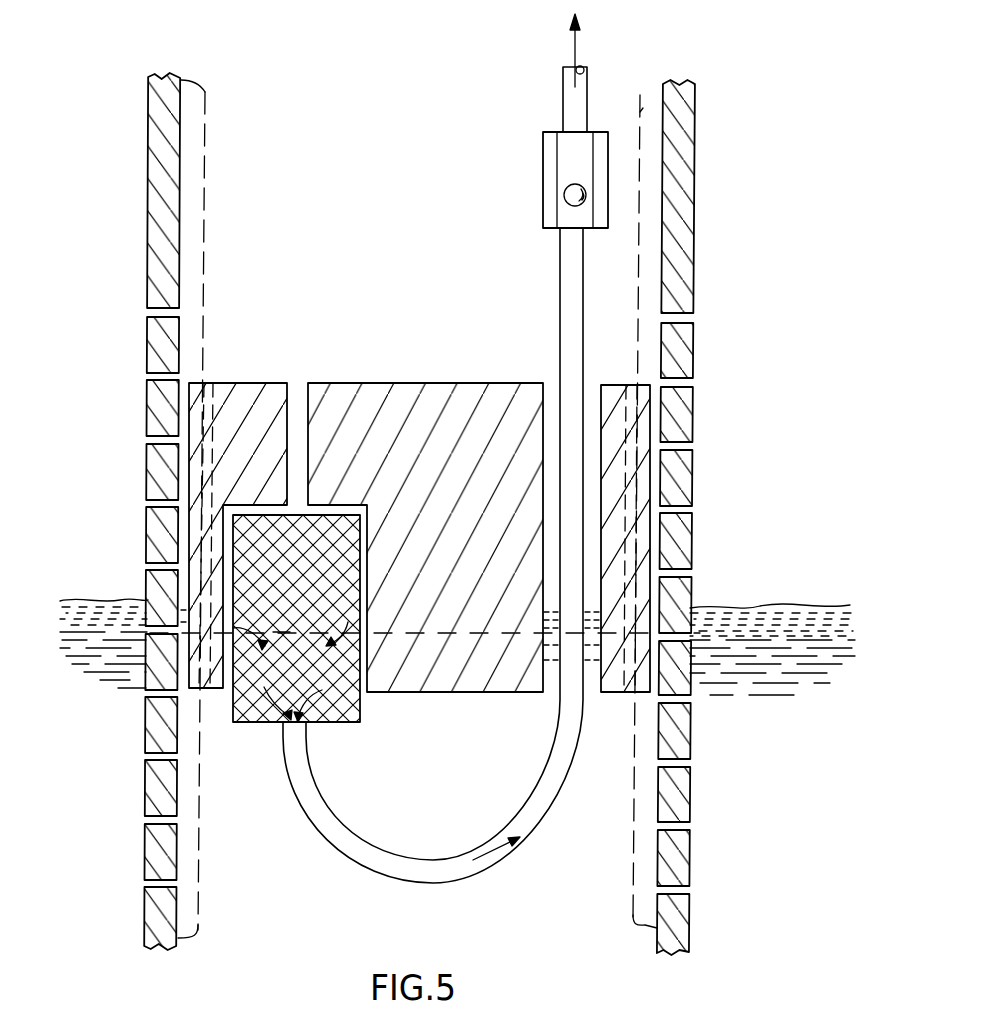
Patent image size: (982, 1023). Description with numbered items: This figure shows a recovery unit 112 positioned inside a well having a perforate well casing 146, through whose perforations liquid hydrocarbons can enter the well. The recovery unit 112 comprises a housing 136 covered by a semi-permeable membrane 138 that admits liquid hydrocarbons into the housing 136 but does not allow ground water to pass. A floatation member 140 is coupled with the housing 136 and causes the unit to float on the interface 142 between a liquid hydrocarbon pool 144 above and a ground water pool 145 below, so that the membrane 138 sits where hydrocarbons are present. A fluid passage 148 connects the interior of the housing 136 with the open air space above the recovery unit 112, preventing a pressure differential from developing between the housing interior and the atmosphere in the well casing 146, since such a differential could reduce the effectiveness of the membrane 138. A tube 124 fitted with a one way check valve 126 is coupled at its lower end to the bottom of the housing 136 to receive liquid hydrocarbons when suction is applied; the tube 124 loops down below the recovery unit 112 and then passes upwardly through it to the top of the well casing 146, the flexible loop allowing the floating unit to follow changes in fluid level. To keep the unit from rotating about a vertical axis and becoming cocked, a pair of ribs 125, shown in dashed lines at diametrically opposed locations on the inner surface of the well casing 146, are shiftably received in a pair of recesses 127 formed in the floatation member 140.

The recovery unit 112 is at (375, 373).
The tube 124 is at (561, 302).
The ribs 125 is at (203, 163).
The one way check valve 126 is at (543, 182).
The recesses 127 is at (213, 430).
The housing 136 is at (262, 723).
The semi-permeable membrane 138 is at (250, 700).
The floatation member 140 is at (437, 403).
The interface 142 is at (727, 637).
The liquid hydrocarbon pool 144 is at (87, 620).
The ground water pool 145 is at (803, 648).
The perforate well casing 146 is at (148, 278).
The fluid passage 148 is at (297, 398).